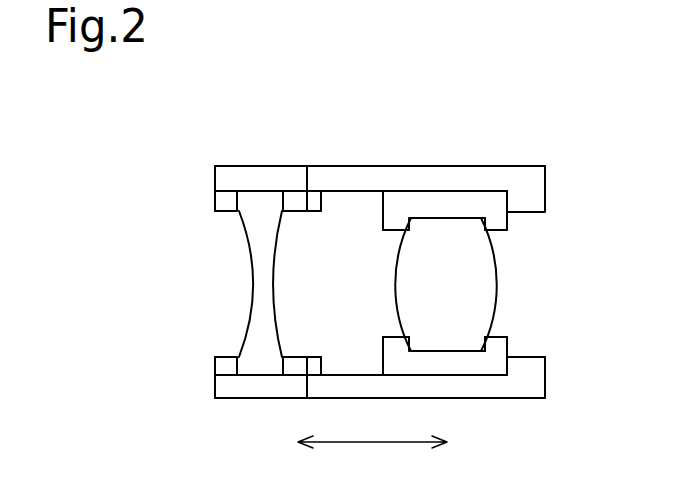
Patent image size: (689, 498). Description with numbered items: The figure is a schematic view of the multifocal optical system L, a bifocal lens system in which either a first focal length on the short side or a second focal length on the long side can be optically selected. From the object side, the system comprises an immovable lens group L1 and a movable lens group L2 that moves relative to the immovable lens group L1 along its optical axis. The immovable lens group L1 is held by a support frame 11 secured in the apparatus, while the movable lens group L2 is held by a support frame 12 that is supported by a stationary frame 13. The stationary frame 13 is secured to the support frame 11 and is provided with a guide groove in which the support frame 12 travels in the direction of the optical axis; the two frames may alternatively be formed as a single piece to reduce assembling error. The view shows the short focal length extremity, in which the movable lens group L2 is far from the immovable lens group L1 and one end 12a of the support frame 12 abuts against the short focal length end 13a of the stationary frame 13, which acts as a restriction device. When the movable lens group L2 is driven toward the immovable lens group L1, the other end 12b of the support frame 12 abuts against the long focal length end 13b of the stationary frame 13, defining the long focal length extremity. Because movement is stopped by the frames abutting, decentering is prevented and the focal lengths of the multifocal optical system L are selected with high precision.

The support frame 11 is at (248, 181).
The support frame 12 is at (440, 200).
The one end of the support frame 12a is at (508, 202).
The other end of the support frame 12b is at (383, 210).
The stationary frame 13 is at (478, 177).
The short focal length end 13a is at (327, 202).
The long focal length end 13b is at (505, 200).
The multifocal optical system L is at (184, 282).
The immovable lens group L1 is at (265, 360).
The movable lens group L2 is at (442, 343).